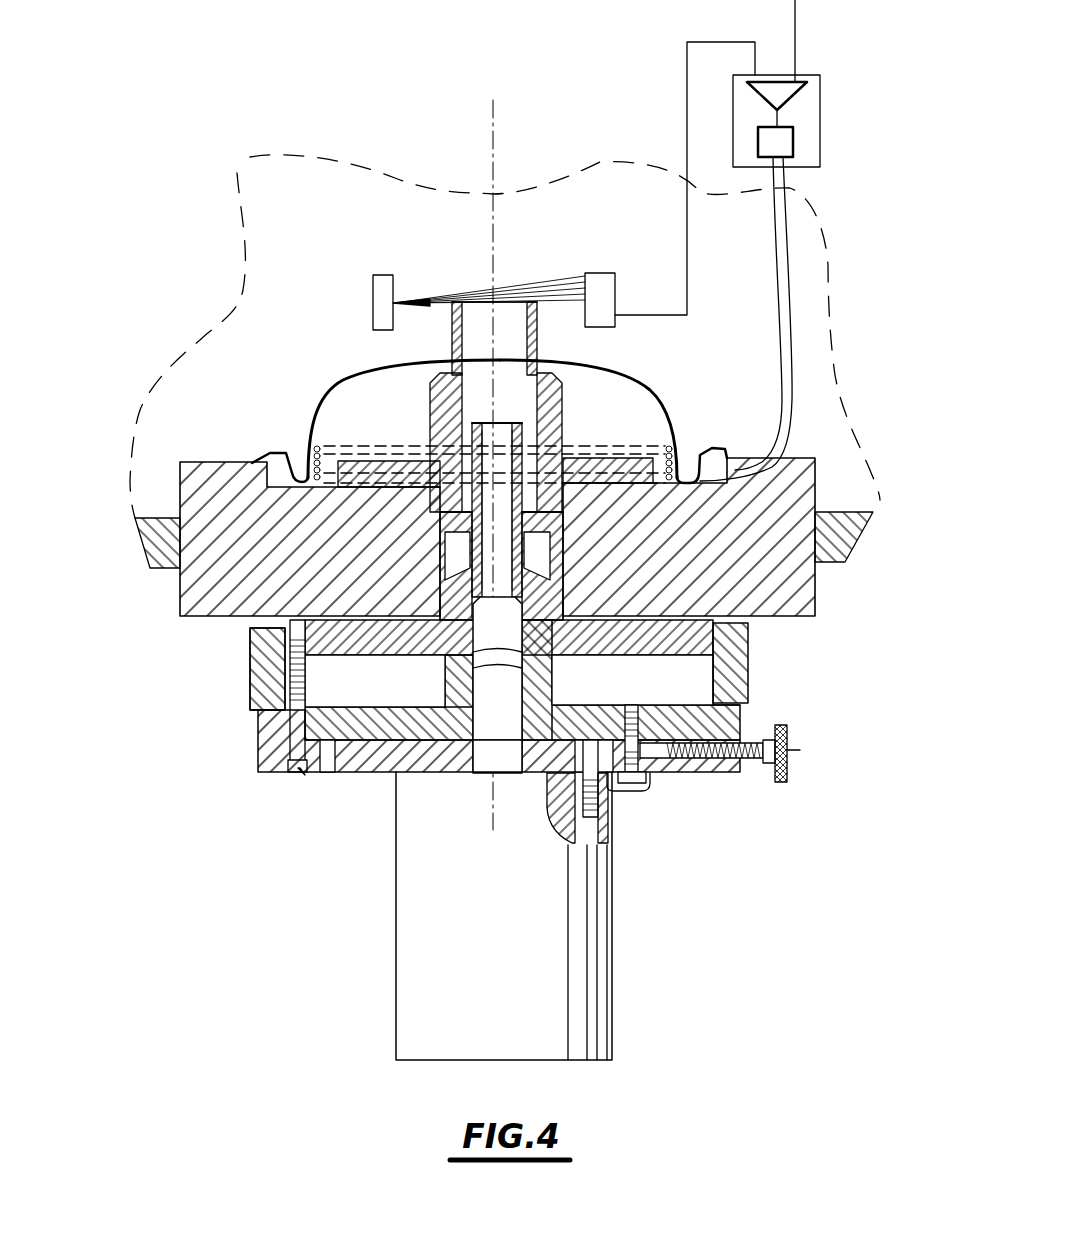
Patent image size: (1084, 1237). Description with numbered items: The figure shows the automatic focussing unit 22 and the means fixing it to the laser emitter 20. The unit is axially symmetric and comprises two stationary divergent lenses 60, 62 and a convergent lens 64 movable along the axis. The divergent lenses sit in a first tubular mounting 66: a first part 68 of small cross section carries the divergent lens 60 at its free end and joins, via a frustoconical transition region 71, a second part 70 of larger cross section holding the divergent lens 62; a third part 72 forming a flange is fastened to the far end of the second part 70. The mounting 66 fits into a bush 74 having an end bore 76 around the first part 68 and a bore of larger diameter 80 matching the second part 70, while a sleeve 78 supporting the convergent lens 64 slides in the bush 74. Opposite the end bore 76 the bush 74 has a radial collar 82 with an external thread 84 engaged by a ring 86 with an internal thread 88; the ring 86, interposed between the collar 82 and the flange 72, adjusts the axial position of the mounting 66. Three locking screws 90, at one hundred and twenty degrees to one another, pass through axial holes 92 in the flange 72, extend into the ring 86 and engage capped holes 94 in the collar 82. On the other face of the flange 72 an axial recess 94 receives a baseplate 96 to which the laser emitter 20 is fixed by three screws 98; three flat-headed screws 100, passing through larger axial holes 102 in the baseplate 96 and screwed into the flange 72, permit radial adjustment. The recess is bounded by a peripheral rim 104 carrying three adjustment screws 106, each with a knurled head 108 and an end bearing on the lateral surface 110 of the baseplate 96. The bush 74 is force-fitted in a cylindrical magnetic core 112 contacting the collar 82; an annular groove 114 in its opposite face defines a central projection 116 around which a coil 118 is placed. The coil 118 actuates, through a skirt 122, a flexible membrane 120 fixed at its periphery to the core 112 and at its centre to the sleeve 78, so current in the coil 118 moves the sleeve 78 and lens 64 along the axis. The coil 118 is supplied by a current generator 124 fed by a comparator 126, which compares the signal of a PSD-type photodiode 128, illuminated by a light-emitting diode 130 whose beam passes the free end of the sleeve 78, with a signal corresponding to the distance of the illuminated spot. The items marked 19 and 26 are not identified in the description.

The wall 19 is at (162, 550).
The laser emitter 20 is at (403, 915).
The automatic focussing unit 22 is at (183, 704).
The central axis 26 is at (490, 148).
The divergent lens 60 is at (470, 432).
The divergent lens 62 is at (486, 745).
The convergent lens 64 is at (473, 377).
The first tubular mounting 66 is at (255, 763).
The first part of small cross section 68 is at (465, 498).
The second part of larger cross section 70 is at (432, 672).
The transition region 71 is at (438, 600).
The third part forming a flange 72 is at (718, 682).
The bush 74 is at (568, 422).
The end bore 76 is at (458, 400).
The sleeve 78 is at (452, 337).
The bore of larger diameter 80 is at (457, 553).
The radial collar 82 is at (600, 645).
The external thread 84 is at (748, 652).
The ring 86 is at (290, 718).
The internal thread 88 is at (262, 676).
The screws for locking the mounting 90 is at (309, 778).
The axial holes 92 is at (297, 770).
The axial recess 94 is at (336, 776).
The baseplate 96 is at (665, 780).
The screws 98 is at (567, 778).
The flat-headed screws 100 is at (630, 783).
The axial holes of larger diameter 102 is at (650, 800).
The peripheral rim 104 is at (722, 777).
The screws for radial adjustment 106 is at (748, 743).
The knurled head 108 is at (800, 750).
The lateral surface 110 is at (746, 776).
The magnetic core 112 is at (797, 583).
The annular groove 114 is at (280, 458).
The central projection 116 is at (663, 505).
The coil 118 is at (682, 452).
The membrane 120 is at (385, 373).
The skirt 122 is at (665, 440).
The current generator 124 is at (795, 148).
The comparator 126 is at (800, 100).
The PSD-type photodiode 128 is at (615, 290).
The light-emitting diode 130 is at (385, 275).